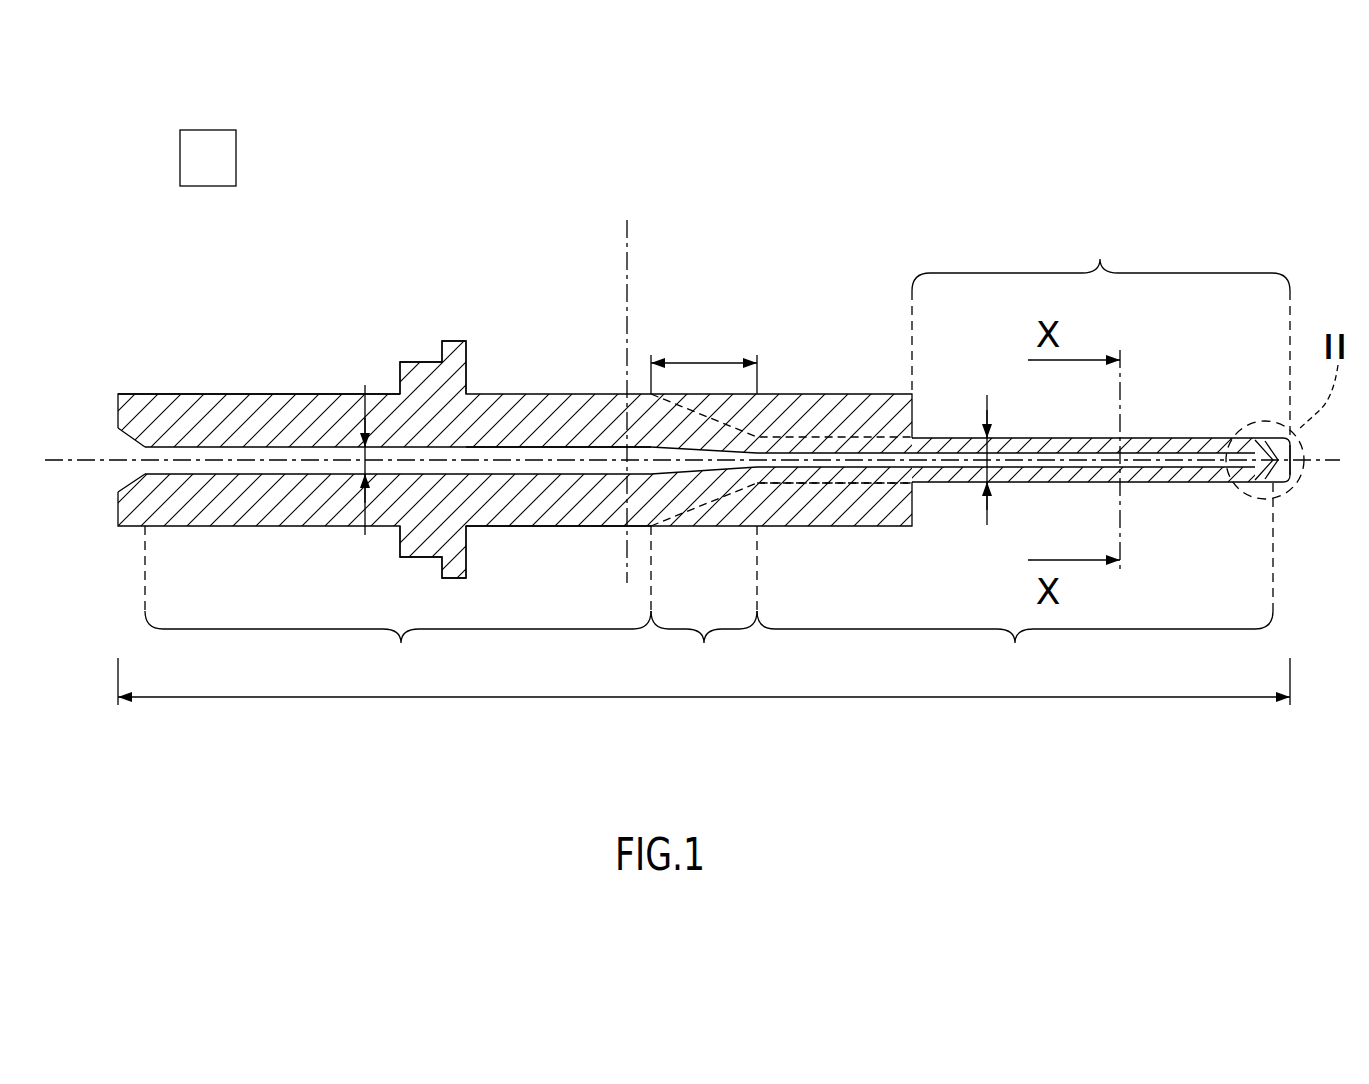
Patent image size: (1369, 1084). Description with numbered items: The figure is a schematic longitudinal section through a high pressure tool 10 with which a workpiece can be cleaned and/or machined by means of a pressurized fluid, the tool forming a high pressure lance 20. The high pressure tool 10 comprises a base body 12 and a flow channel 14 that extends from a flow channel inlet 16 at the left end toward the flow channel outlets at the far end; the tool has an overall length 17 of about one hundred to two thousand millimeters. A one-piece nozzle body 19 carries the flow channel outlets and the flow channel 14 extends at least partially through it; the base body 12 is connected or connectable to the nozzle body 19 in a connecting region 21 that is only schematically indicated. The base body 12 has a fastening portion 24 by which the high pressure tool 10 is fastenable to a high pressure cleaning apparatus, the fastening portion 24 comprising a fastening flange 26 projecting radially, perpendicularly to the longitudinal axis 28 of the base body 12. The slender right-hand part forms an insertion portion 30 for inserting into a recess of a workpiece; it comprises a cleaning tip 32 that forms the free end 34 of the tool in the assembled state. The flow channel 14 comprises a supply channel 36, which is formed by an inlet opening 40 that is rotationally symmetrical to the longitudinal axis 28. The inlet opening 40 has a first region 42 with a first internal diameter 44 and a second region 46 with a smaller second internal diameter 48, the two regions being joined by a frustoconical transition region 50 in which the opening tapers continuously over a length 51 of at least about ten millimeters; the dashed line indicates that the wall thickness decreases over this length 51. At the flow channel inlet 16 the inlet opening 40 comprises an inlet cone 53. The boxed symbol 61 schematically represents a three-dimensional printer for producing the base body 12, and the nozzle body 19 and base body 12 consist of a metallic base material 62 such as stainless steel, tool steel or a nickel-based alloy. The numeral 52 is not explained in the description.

The high pressure tool 10 is at (721, 259).
The base body 12 is at (167, 394).
The flow channel 14 is at (259, 446).
The flow channel inlet 16 is at (114, 445).
The length 17 is at (705, 697).
The nozzle body 19 is at (1187, 440).
The high pressure lance 20 is at (787, 284).
The connecting region 21 is at (627, 275).
The fastening portion 24 is at (347, 393).
The fastening flange 26 is at (457, 341).
The longitudinal axis 28 is at (65, 462).
The insertion portion 30 is at (1101, 331).
The cleaning tip 32 is at (1290, 505).
The free end 34 is at (1290, 505).
The supply channel 36 is at (575, 447).
The inlet opening 40 is at (293, 455).
The first region 42 is at (398, 603).
The first internal diameter 44 is at (363, 480).
The second region 46 is at (1015, 582).
The second internal diameter 48 is at (987, 460).
The transition region 50 is at (704, 603).
The length 51 is at (703, 363).
The joint 52 is at (847, 483).
The inlet cone 53 is at (114, 474).
The 3D printer 61 is at (194, 173).
The metallic base material 62 is at (564, 512).